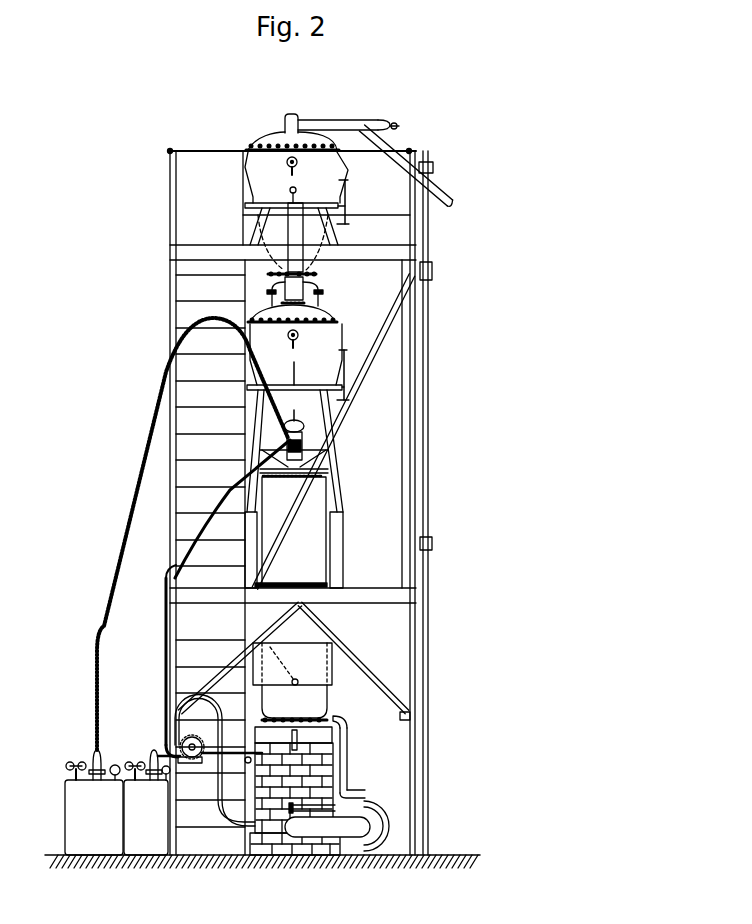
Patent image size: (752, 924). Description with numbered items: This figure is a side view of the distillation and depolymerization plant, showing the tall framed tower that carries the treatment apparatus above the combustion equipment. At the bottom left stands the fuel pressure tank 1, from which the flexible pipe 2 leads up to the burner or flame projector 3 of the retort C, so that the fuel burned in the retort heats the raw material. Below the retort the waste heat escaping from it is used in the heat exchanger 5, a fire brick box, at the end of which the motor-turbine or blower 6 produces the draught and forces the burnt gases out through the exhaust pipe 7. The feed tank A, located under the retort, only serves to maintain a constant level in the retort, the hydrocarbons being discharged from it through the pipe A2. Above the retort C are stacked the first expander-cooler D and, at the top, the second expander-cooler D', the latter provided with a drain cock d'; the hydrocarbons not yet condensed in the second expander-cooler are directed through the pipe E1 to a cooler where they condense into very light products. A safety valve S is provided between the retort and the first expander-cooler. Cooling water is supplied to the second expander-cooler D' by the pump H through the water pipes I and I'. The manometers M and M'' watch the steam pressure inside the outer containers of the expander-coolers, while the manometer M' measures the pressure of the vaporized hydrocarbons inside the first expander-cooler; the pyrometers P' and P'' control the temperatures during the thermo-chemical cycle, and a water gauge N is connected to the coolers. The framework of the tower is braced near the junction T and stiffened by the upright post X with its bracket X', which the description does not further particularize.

The fuel pressure tank 1 is at (90, 808).
The flexible pipe 2 is at (126, 538).
The burner or flame projector 3 is at (283, 441).
The heat exchanger 5 is at (335, 735).
The motor-turbine or blower 6 is at (387, 816).
The exhaust pipe 7 is at (345, 783).
The feed tank A is at (312, 636).
The discharge pipe A2 is at (263, 697).
The retort C is at (312, 662).
The first expander-cooler D is at (313, 350).
The second expander-cooler D' is at (278, 193).
The pipe E1 is at (454, 200).
The pump H is at (200, 734).
The water pipe I is at (153, 661).
The water pipe I' is at (232, 509).
The manometer M is at (328, 331).
The manometer M' is at (315, 274).
The manometer M'' is at (251, 166).
The water gauge N is at (344, 207).
The pyrometer P' is at (273, 224).
The pyrometer P'' is at (367, 118).
The safety valve S is at (268, 378).
The brace junction T is at (262, 625).
The post X is at (437, 503).
The bracket X' is at (441, 172).
The drain cock d' is at (317, 291).